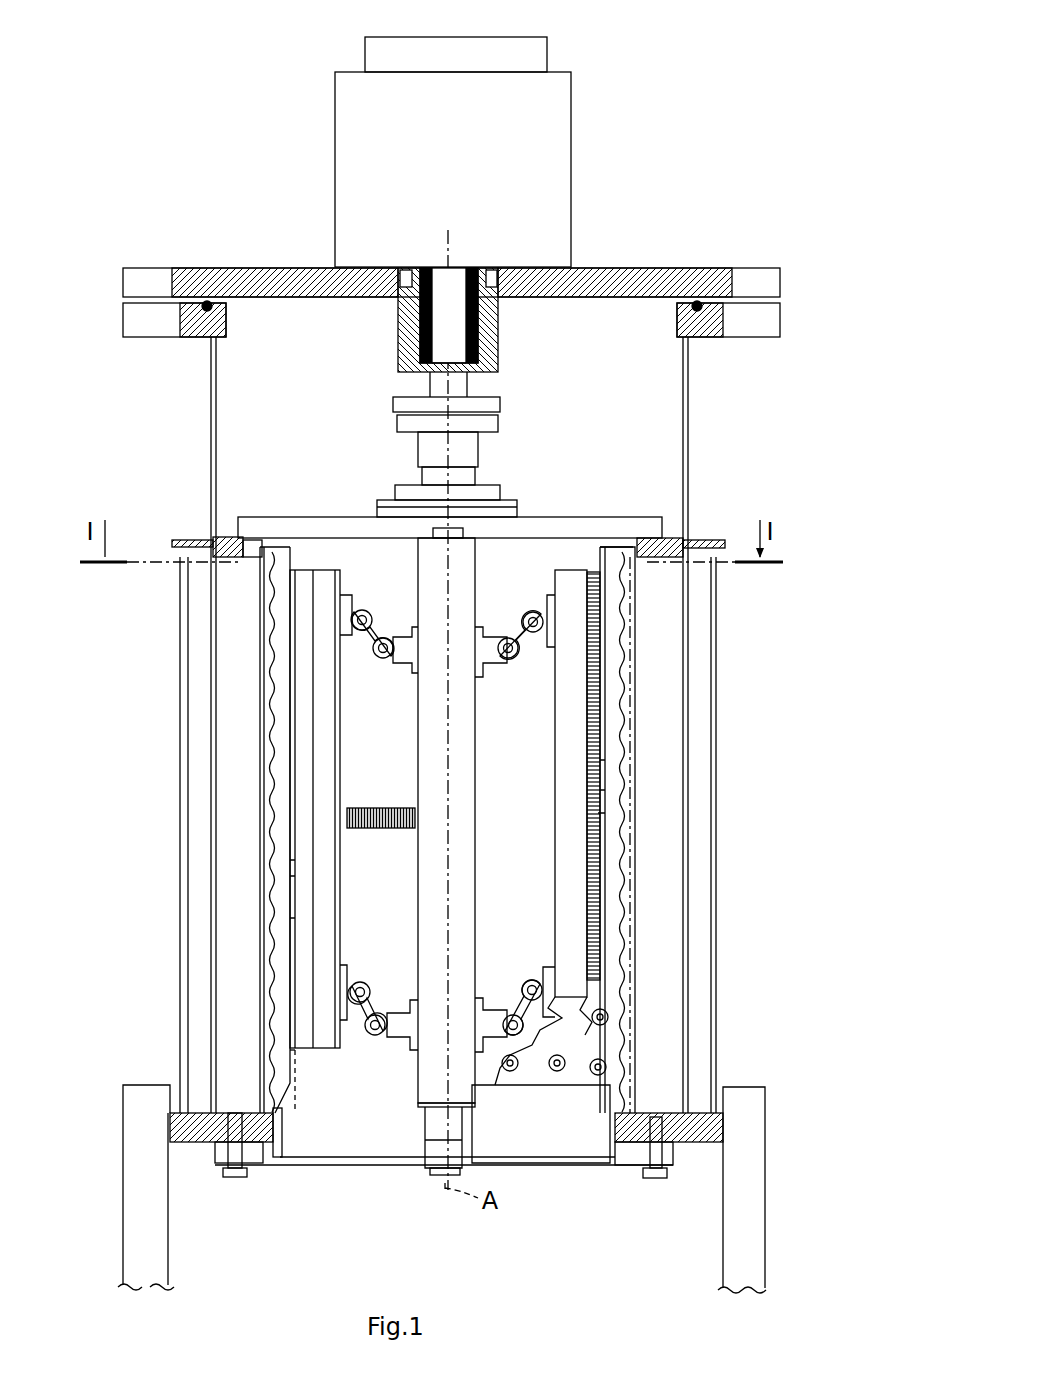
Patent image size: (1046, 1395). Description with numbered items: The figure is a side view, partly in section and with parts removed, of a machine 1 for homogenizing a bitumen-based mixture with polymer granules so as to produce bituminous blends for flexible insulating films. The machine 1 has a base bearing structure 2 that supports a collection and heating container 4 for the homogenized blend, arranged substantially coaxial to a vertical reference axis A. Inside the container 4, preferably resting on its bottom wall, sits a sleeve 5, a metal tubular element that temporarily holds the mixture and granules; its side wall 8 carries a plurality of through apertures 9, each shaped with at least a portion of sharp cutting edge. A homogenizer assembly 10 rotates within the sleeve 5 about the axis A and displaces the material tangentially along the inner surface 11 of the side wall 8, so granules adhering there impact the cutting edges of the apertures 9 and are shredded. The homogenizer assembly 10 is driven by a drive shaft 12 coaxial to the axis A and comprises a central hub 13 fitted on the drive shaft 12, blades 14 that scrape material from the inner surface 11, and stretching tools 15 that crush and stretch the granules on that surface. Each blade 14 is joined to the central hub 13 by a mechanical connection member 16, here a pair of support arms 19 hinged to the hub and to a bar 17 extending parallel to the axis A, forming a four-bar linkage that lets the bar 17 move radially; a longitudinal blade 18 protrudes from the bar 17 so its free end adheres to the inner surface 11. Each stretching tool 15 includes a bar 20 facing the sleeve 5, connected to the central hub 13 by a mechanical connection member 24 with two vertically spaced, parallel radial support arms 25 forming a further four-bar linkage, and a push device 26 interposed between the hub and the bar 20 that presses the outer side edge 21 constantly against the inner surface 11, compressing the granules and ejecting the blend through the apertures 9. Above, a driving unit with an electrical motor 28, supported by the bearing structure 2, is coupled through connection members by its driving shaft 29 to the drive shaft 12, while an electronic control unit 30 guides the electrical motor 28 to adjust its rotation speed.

The machine 1 is at (687, 213).
The base bearing structure 2 is at (755, 1205).
The collection and heating container 4 is at (625, 690).
The sleeve 5 is at (575, 1075).
The side wall 8 is at (603, 777).
The through apertures 9 is at (607, 1017).
The homogenizer assembly 10 is at (530, 582).
The inner surface 11 is at (600, 813).
The drive shaft 12 is at (437, 523).
The central hub 13 is at (415, 582).
The blades 14 is at (593, 563).
The stretching tools 15 is at (318, 1053).
The mechanical connection member 16 is at (530, 652).
The bar 17 is at (570, 952).
The longitudinal blade 18 is at (592, 737).
The support arms 19 is at (508, 620).
The bar 20 is at (300, 755).
The outer side edge 21 is at (290, 868).
The mechanical connection member 24 is at (355, 633).
The radial support arms 25 is at (372, 663).
The push device 26 is at (347, 817).
The electrical motor 28 is at (341, 117).
The driving shaft 29 is at (460, 388).
The electronic control unit 30 is at (525, 50).